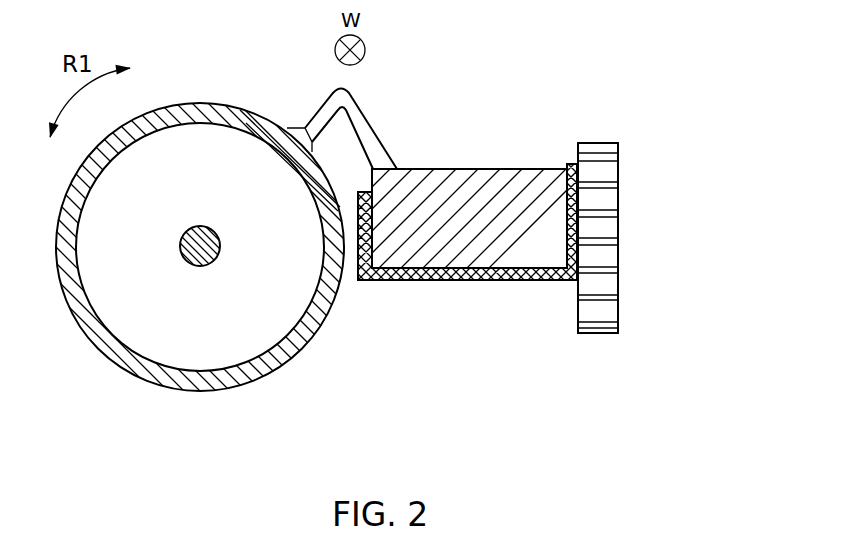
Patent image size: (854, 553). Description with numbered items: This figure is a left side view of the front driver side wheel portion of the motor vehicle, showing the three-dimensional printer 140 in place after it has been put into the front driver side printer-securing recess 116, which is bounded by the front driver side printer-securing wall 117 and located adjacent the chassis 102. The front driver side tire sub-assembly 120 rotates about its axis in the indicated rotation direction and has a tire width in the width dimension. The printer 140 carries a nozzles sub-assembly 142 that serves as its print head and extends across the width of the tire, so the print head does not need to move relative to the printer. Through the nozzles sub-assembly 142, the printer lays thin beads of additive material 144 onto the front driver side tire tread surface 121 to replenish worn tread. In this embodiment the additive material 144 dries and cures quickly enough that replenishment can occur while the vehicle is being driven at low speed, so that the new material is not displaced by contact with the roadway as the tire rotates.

The chassis 102 is at (618, 282).
The front driver side printer-securing recess 116 is at (421, 253).
The front driver side printer-securing wall 117 is at (358, 282).
The front driver side tire sub-assembly 120 is at (206, 252).
The front driver side tire tread surface 121 is at (310, 348).
The 3D printer 140 is at (470, 168).
The nozzles sub-assembly 142 is at (372, 113).
The additive material 144 is at (293, 128).